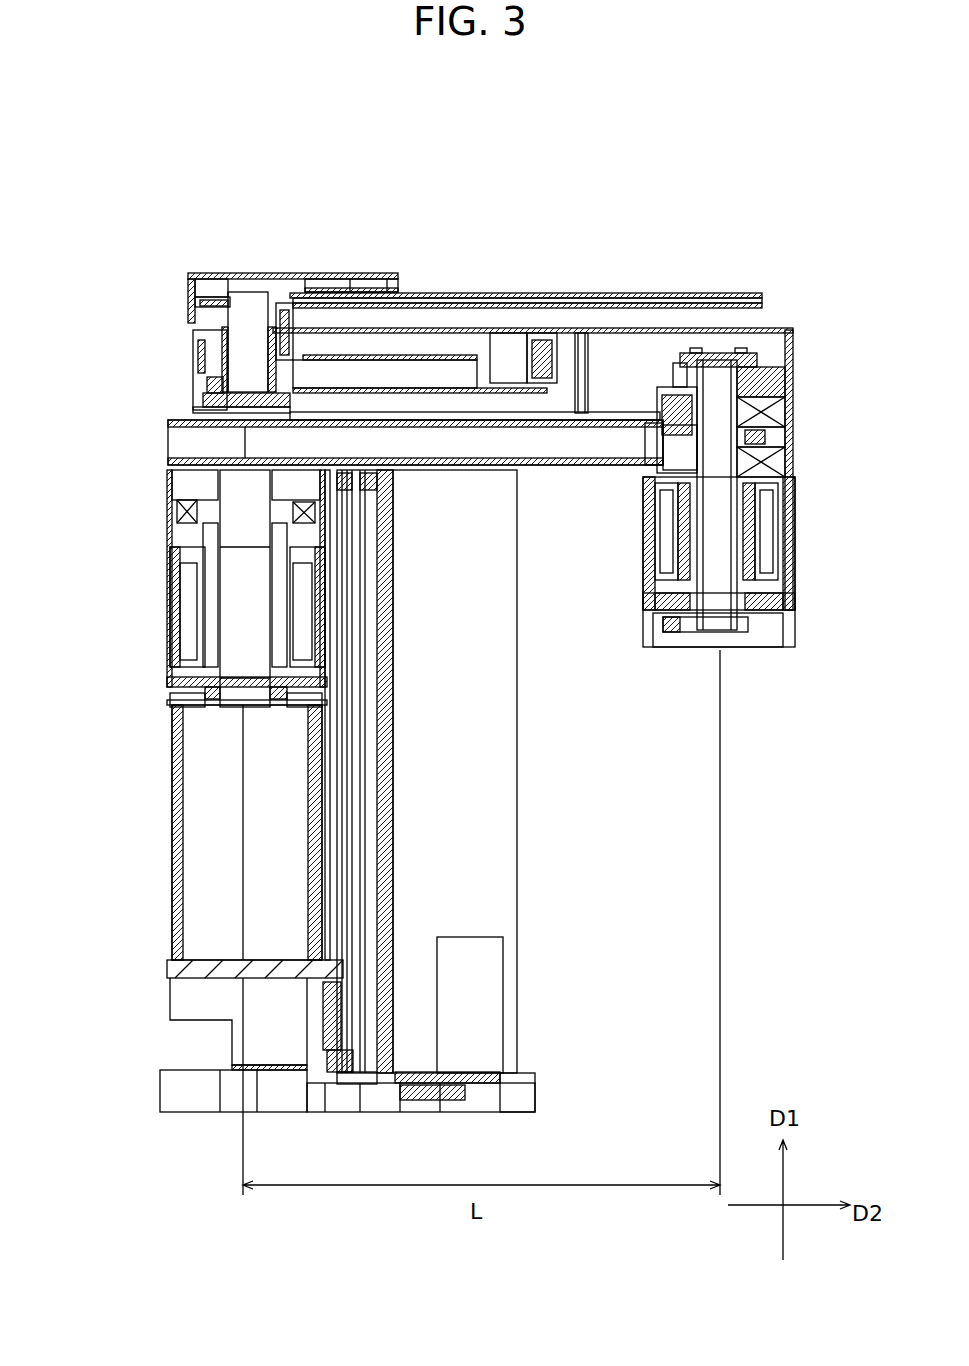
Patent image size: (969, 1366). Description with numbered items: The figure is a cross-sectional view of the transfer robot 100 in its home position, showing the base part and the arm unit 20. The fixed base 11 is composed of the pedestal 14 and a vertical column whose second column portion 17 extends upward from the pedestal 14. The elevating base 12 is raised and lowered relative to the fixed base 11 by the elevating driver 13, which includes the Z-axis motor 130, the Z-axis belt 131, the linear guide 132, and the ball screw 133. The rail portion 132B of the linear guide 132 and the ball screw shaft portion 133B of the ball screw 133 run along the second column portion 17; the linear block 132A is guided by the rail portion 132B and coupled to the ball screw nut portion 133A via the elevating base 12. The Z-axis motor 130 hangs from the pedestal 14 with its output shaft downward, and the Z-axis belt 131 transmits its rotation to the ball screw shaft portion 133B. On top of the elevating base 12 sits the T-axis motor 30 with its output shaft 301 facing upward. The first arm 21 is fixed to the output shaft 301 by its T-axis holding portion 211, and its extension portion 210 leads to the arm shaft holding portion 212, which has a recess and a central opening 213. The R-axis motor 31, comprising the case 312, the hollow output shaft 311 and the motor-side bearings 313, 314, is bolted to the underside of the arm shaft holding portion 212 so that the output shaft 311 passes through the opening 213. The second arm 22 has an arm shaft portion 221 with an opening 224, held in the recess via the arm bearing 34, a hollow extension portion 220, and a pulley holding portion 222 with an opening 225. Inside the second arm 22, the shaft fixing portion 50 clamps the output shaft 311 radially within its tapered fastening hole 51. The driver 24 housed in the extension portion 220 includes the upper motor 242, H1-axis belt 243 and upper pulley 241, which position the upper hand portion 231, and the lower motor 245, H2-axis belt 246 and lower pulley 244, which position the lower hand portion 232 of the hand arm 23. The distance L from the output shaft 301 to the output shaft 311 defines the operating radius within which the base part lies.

The transfer robot 100 is at (746, 145).
The arm unit 20 is at (206, 235).
The driver 24 is at (613, 170).
The hand arm 23 is at (205, 272).
The upper pulley 241 is at (228, 275).
The lower pulley 244 is at (288, 275).
The H2-axis belt 246 is at (405, 352).
The lower motor 245 is at (458, 380).
The H1-axis belt 243 is at (497, 362).
The upper motor 242 is at (540, 345).
The extension portion 220 is at (582, 412).
The extension portion 210 is at (592, 352).
The upper hand portion 231 is at (650, 293).
The lower hand portion 232 is at (687, 303).
The fastening hole 51 is at (730, 352).
The shaft fixing portion 50 is at (748, 362).
The arm shaft portion 221 is at (790, 345).
The opening 225 is at (205, 302).
The pulley holding portion 222 is at (200, 340).
The second arm 22 is at (196, 385).
The T-axis holding portion 211 is at (180, 418).
The first arm 21 is at (168, 440).
The opening 224 is at (770, 390).
The arm bearing 34 is at (762, 410).
The arm shaft holding portion 212 is at (770, 437).
The opening 213 is at (770, 462).
The motor-side bearing 313 is at (767, 497).
The output shaft 311 is at (765, 545).
The R-axis motor 31 is at (870, 487).
The case 312 is at (765, 600).
The motor-side bearing 314 is at (750, 635).
The output shaft 301 is at (235, 520).
The T-axis motor 30 is at (195, 603).
The elevating base 12 is at (175, 740).
The fixed base 11 is at (534, 731).
The second column portion 17 is at (395, 795).
The rail portion 132B is at (333, 890).
The linear guide 132 is at (185, 770).
The linear block 132A is at (310, 1020).
The Z-axis motor 130 is at (482, 1012).
The pedestal 14 is at (520, 1068).
The elevating driver 13 is at (558, 1121).
The Z-axis belt 131 is at (422, 1100).
The ball screw nut portion 133A is at (327, 1040).
The ball screw 133 is at (202, 1104).
The ball screw shaft portion 133B is at (345, 1060).